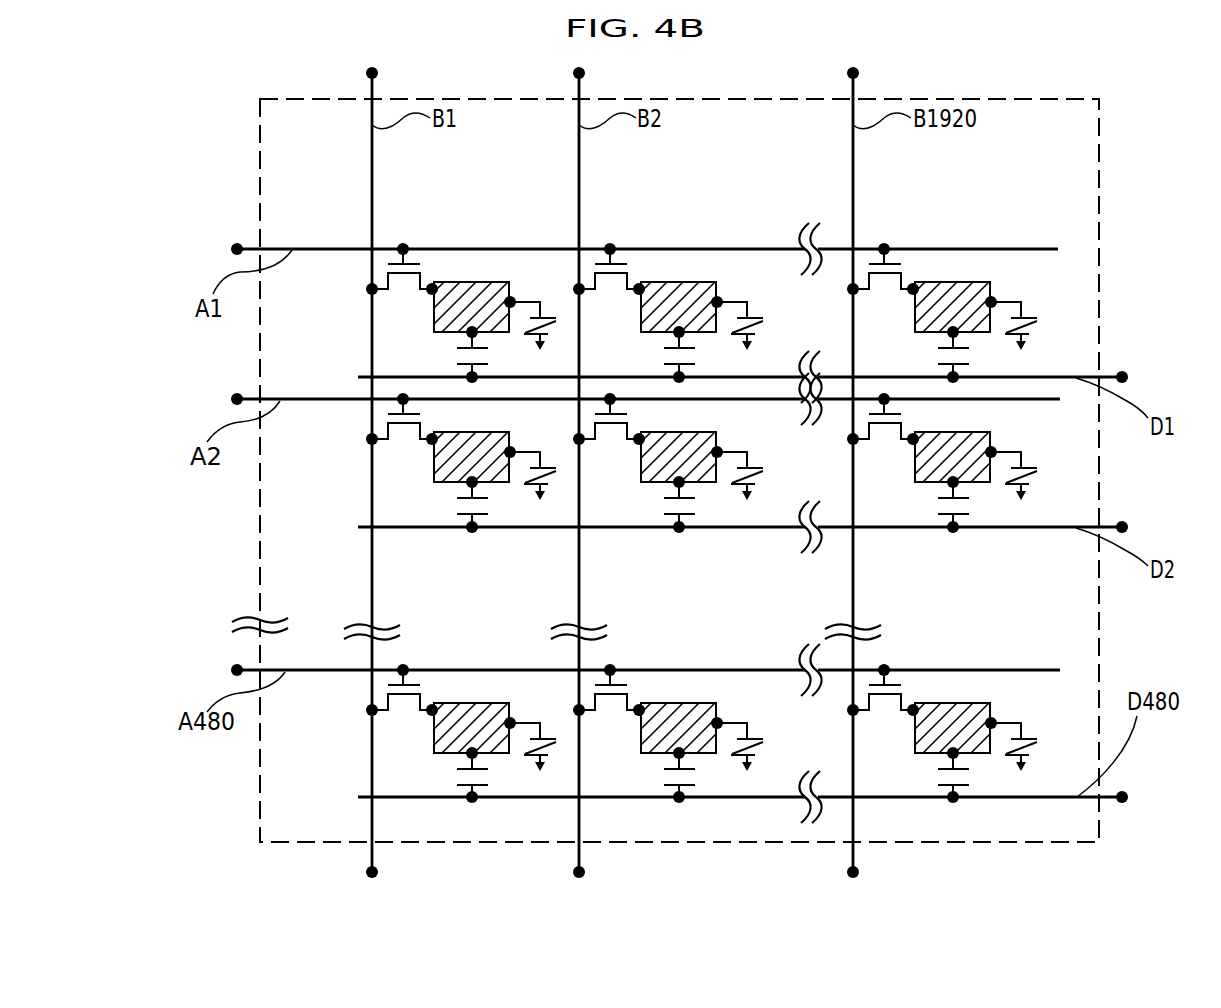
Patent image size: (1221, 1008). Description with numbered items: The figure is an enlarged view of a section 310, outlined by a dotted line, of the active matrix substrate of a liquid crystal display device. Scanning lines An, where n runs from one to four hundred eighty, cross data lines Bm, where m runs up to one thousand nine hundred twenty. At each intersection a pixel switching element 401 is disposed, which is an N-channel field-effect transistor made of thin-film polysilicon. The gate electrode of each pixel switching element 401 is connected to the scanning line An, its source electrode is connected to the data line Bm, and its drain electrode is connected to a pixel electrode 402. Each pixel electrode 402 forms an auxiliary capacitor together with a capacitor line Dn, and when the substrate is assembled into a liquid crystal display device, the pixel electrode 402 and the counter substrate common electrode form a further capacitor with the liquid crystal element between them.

The section surrounded by a dotted line 310 is at (288, 842).
The pixel switching element 401 is at (392, 282).
The pixel electrode 402 is at (510, 290).